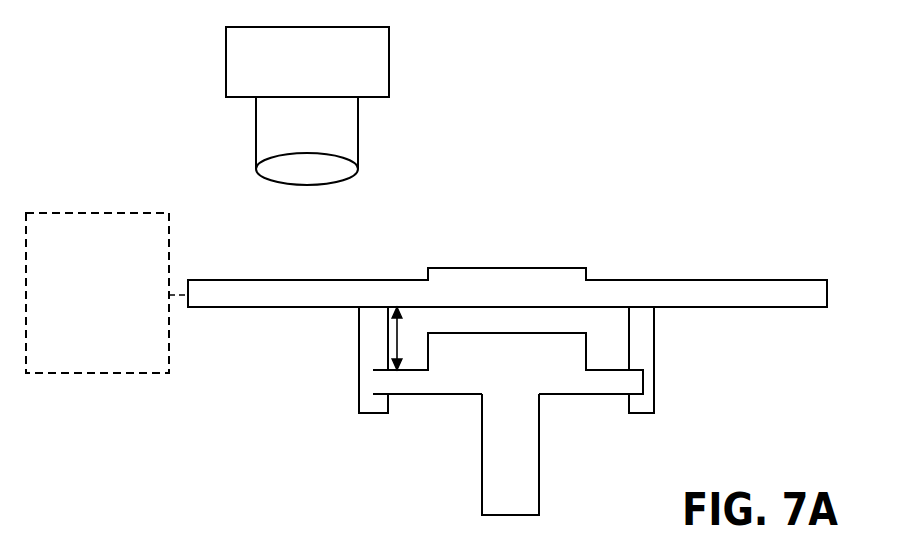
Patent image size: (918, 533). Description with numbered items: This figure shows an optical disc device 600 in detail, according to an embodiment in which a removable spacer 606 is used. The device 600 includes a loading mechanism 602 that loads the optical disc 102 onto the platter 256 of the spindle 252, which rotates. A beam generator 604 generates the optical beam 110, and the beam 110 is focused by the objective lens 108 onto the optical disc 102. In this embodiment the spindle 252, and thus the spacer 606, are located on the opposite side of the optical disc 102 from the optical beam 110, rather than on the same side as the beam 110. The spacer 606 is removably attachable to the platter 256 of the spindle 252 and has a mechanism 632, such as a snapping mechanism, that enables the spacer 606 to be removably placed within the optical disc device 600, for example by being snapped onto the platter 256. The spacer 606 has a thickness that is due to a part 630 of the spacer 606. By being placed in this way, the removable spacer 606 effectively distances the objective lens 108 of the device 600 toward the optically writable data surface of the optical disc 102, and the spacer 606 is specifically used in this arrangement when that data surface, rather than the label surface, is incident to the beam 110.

The beam generator 604 is at (389, 77).
The optical beam 110 is at (328, 139).
The objective lens 108 is at (283, 163).
The loading mechanism 602 is at (147, 212).
The optical disc 102 is at (827, 288).
The optical disc device 600 is at (607, 162).
The platter 256 is at (450, 393).
The spindle 252 is at (527, 485).
The spacer 606 is at (632, 327).
The part 630 is at (357, 332).
The mechanism 632 is at (372, 408).